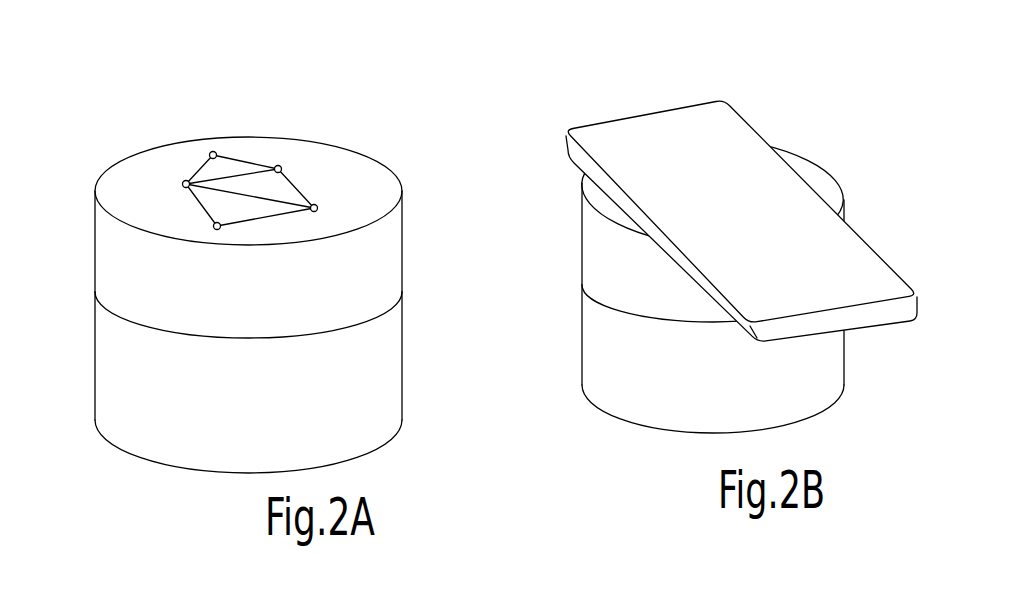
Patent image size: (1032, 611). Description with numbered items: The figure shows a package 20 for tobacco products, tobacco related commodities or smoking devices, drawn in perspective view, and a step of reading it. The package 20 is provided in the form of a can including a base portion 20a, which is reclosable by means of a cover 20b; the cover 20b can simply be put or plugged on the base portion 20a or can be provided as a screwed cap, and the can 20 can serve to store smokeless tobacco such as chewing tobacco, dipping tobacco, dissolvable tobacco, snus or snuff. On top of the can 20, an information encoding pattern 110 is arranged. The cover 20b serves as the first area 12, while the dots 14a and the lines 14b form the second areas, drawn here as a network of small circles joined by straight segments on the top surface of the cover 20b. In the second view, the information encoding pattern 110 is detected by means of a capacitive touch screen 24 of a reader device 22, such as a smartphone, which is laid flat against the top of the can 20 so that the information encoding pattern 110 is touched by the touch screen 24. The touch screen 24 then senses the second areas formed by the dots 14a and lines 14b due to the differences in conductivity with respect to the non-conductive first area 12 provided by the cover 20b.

In FIG. 2A, the first area 12 is at (315, 167).
In FIG. 2A, the dots 14a is at (318, 207).
In FIG. 2A, the lines 14b is at (237, 159).
In FIG. 2A, the package 20 is at (255, 244).
In FIG. 2B, the package 20 is at (663, 281).
In FIG. 2A, the base portion 20a is at (96, 380).
In FIG. 2B, the base portion 20a is at (582, 358).
In FIG. 2A, the cover 20b is at (255, 161).
In FIG. 2B, the cover 20b is at (582, 270).
In FIG. 2B, the reader device 22 is at (726, 99).
In FIG. 2B, the capacitive touch screen 24 is at (567, 182).
In FIG. 2A, the information encoding pattern 110 is at (330, 123).